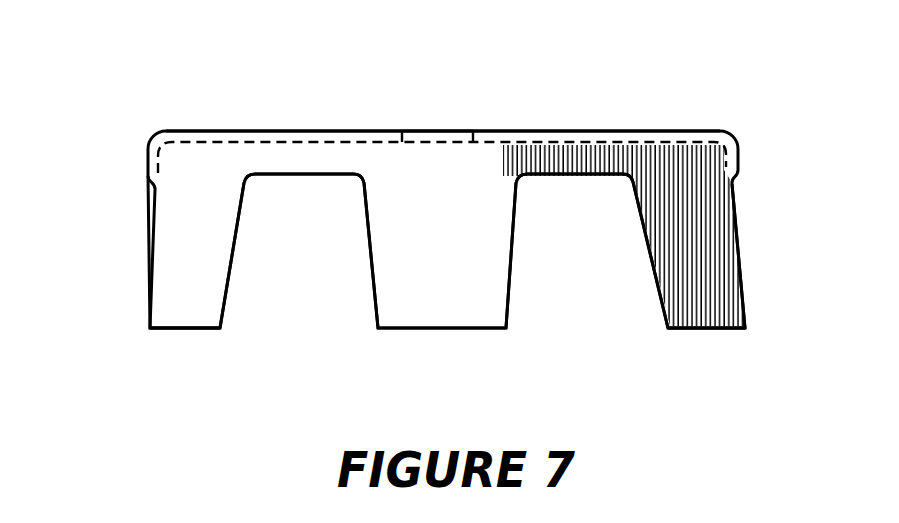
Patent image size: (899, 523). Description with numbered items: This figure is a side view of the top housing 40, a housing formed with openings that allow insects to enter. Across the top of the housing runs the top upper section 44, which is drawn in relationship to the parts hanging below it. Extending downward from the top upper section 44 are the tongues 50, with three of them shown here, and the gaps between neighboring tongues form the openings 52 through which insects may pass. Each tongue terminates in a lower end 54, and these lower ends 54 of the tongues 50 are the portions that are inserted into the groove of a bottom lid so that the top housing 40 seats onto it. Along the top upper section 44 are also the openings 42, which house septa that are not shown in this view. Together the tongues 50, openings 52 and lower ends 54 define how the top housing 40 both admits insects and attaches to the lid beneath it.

The top housing 40 is at (657, 117).
The openings 42 is at (445, 128).
The top upper section 44 is at (317, 128).
The tongues 50 is at (178, 217).
The openings 52 is at (317, 263).
The lower end 54 is at (183, 332).